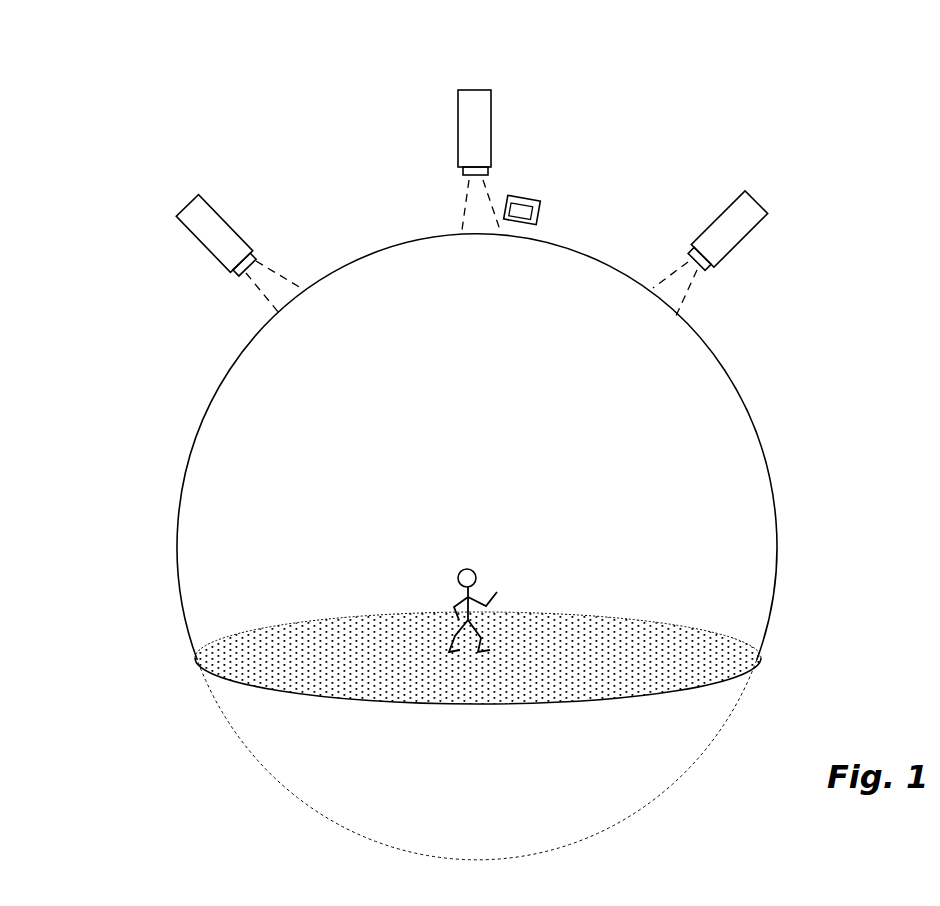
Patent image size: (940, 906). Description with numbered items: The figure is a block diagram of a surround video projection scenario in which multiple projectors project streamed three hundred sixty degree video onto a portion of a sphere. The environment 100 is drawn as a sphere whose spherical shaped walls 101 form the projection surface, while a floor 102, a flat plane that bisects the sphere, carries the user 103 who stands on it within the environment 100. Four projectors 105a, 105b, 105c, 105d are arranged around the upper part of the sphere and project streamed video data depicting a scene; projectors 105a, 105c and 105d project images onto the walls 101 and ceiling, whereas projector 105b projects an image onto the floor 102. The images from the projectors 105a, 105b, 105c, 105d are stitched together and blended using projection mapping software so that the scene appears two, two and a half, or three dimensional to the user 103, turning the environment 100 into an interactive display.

The environment 100 is at (864, 155).
The spherical shaped walls 101 is at (790, 418).
The floor 102 is at (225, 660).
The user / viewer 103 is at (478, 572).
The projector 105a is at (200, 249).
The projector 105b is at (478, 90).
The projector 105c is at (541, 209).
The projector 105d is at (750, 231).